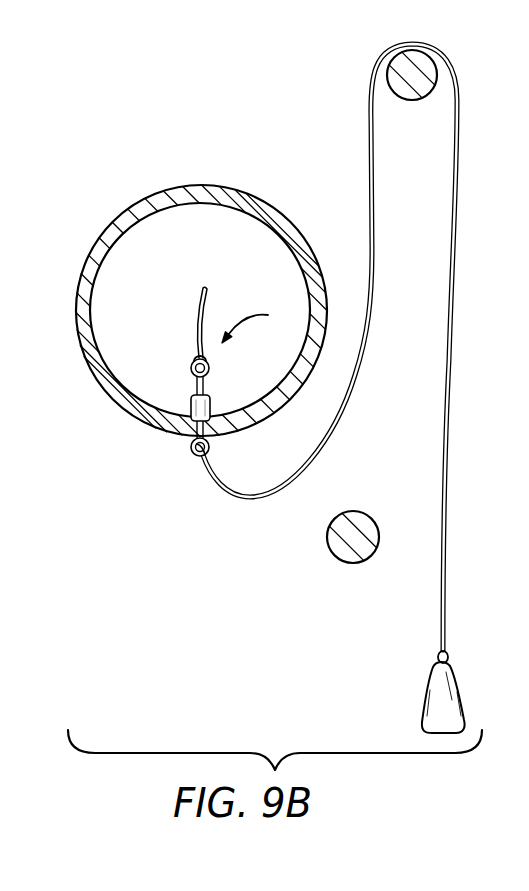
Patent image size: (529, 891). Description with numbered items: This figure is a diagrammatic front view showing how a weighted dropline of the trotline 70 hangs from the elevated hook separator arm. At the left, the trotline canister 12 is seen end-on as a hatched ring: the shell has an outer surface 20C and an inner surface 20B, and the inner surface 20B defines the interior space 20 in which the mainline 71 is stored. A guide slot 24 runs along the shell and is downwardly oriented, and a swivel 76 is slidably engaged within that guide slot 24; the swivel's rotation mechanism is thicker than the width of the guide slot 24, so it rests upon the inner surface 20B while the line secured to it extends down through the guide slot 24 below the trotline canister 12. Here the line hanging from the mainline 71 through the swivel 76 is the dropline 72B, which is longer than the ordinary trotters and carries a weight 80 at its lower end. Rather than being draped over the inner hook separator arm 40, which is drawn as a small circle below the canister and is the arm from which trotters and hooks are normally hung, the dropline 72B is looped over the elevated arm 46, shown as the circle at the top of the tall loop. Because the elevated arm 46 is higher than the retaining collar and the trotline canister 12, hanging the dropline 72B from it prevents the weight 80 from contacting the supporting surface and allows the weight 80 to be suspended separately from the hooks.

The trotline canister 12 is at (158, 200).
The interior space 20 is at (135, 273).
The inner surface 20B is at (88, 350).
The outer surface 20C is at (271, 205).
The mainline 71 is at (206, 303).
The trotline 70 is at (257, 322).
The swivel 76 is at (191, 400).
The guide slot 24 is at (193, 447).
The dropline 72B is at (455, 206).
The elevated arm 46 is at (412, 101).
The inner hook separator arm 40 is at (340, 557).
The weight 80 is at (425, 697).